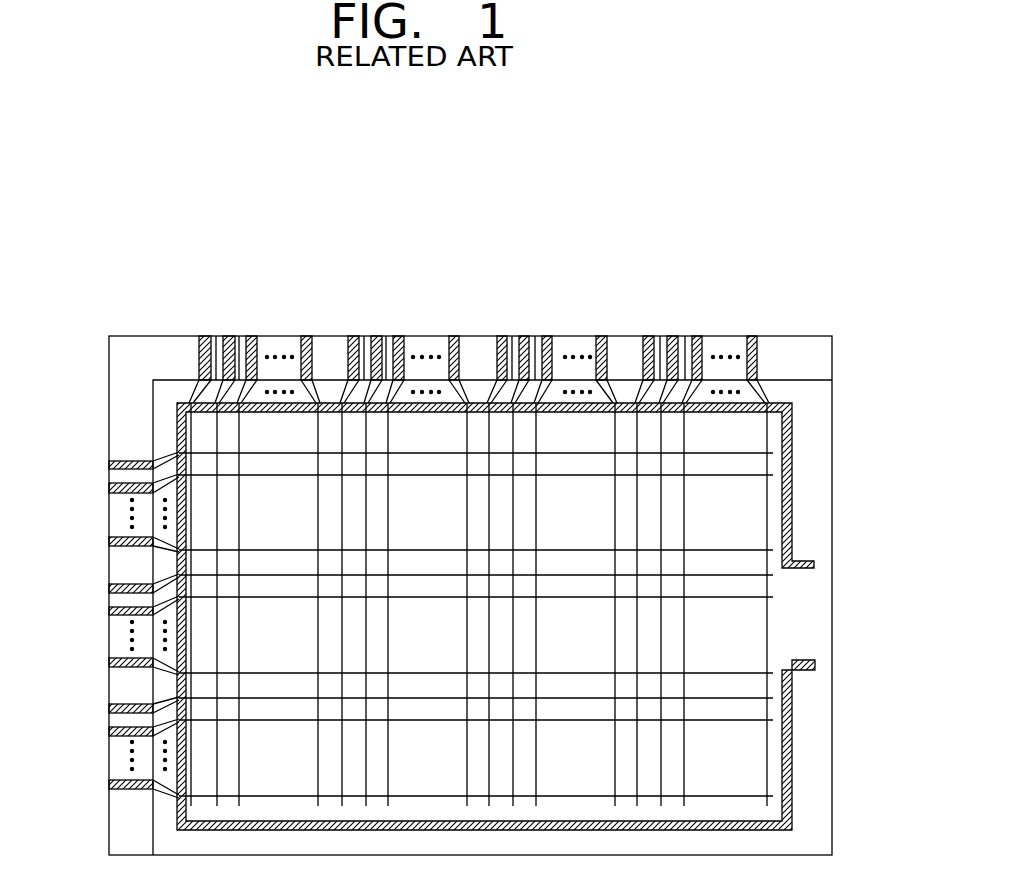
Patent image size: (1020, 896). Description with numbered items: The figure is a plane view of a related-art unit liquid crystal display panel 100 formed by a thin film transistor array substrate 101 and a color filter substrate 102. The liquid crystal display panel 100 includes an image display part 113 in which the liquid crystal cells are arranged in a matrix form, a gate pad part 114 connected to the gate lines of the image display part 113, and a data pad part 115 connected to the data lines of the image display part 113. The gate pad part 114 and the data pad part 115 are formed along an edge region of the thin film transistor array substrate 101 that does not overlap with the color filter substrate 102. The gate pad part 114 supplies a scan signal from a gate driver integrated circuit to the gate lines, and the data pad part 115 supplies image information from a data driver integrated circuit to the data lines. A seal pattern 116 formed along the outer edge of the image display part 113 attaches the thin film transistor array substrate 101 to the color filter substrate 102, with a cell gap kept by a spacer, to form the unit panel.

The liquid crystal display panel 100 is at (134, 316).
The thin film transistor array substrate 101 is at (818, 358).
The color filter substrate 102 is at (818, 419).
The image display part 113 is at (445, 527).
The gate pad part 114 is at (98, 793).
The data pad part 115 is at (763, 320).
The seal pattern 116 is at (786, 488).